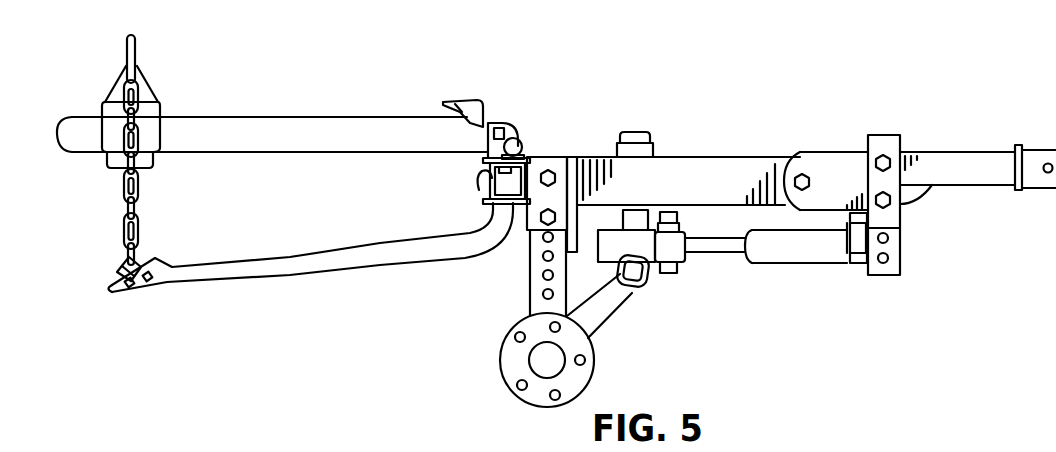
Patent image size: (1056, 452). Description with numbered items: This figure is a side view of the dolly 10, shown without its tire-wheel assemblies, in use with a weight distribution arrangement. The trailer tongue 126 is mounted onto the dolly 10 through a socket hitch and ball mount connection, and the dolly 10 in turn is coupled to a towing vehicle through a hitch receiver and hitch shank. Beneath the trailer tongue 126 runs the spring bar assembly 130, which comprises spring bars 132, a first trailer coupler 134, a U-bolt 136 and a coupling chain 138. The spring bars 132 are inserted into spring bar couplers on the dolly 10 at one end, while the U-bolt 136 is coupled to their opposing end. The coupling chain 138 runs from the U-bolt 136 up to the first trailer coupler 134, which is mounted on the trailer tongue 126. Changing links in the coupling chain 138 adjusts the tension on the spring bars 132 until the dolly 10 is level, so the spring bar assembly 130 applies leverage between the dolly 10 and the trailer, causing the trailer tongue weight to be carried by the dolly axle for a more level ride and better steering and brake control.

The dolly 10 is at (718, 128).
The trailer tongue 126 is at (290, 135).
The spring bar assembly 130 is at (276, 210).
The spring bars 132 is at (396, 253).
The first trailer coupler 134 is at (147, 120).
The U-bolt 136 is at (117, 266).
The coupling chain 138 is at (140, 201).